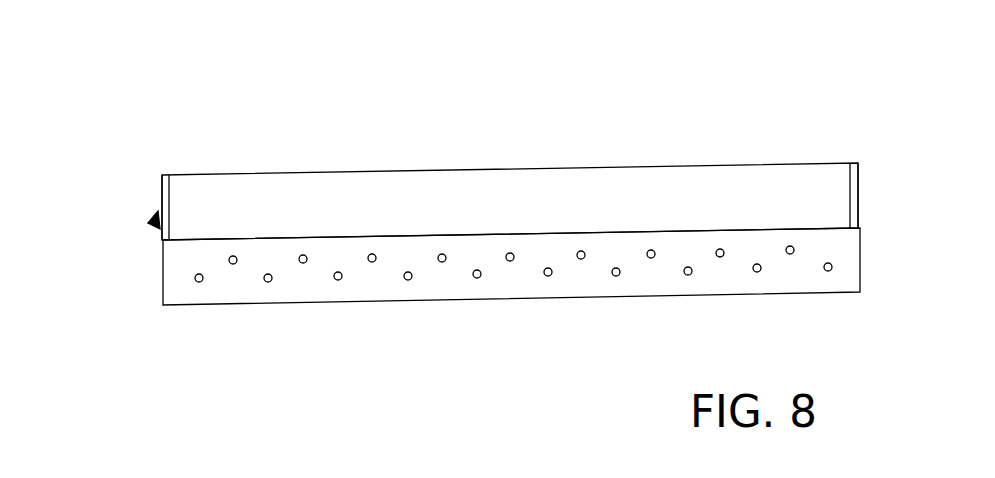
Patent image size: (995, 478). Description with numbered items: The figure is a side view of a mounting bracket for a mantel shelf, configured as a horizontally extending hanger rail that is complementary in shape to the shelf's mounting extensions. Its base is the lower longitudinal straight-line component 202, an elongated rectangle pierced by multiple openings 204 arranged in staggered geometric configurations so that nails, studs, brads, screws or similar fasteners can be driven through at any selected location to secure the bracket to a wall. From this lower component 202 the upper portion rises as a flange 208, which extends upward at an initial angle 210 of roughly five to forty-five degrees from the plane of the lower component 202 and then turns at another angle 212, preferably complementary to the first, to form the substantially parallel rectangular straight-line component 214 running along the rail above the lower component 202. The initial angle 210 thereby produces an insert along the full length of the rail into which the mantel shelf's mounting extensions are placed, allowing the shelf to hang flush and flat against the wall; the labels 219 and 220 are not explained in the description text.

The lower longitudinal straight-line component 202 is at (163, 240).
The openings 204 is at (688, 275).
The flange 208 is at (622, 197).
The initial angle 210 is at (158, 212).
The another angle 212 is at (158, 205).
The substantially parallel rectangular straight-line component 214 is at (862, 163).
The outer edge 219 is at (160, 182).
The panel assembly 220 is at (425, 150).